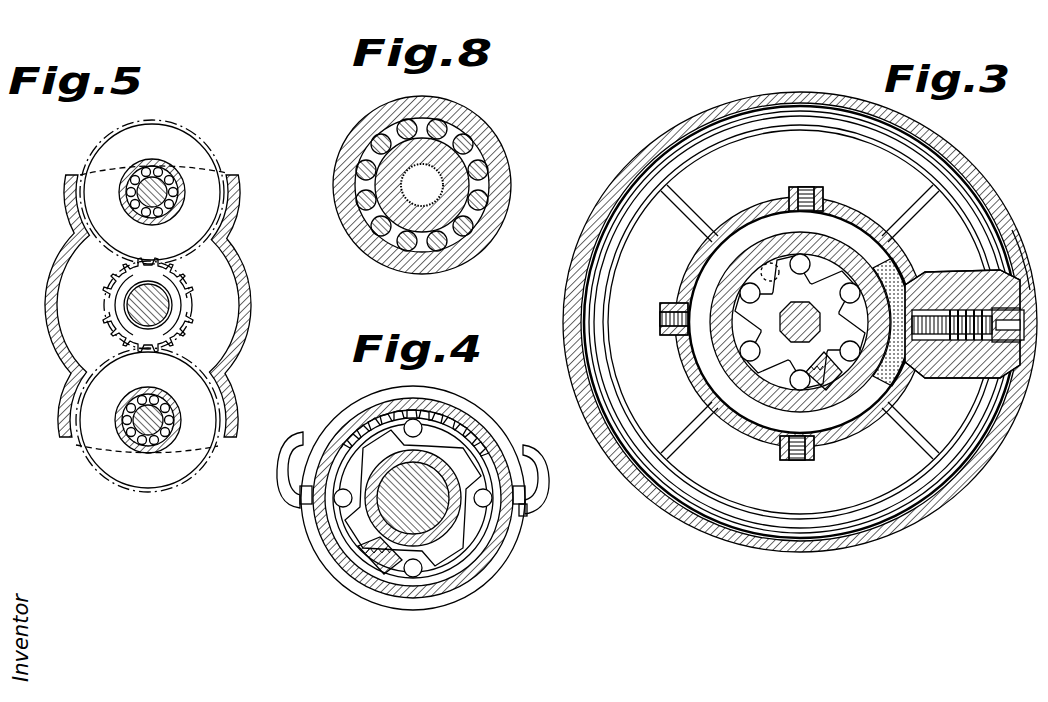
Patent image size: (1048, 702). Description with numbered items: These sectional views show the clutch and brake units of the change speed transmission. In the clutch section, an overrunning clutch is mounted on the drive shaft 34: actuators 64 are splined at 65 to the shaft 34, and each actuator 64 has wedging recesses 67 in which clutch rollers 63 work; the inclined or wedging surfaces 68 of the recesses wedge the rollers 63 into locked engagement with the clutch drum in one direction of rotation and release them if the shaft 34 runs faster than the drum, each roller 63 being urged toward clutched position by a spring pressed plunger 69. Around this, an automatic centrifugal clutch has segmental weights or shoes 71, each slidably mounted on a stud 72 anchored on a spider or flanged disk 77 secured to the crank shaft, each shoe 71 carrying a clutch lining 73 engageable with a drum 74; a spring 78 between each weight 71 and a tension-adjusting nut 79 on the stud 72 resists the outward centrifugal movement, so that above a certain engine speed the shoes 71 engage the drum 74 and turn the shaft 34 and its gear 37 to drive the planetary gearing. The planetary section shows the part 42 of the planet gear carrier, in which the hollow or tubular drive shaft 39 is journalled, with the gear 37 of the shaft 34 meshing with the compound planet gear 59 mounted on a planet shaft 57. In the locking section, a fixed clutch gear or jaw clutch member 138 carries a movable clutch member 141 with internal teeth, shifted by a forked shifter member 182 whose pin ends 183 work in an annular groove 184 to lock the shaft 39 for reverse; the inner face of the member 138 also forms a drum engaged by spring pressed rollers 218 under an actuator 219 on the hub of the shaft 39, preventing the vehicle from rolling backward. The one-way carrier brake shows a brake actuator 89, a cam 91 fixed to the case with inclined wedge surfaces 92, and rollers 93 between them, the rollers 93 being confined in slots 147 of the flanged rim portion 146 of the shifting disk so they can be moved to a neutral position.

In FIG. 5, the drive shaft 34 is at (158, 315).
In FIG. 4, the drive shaft 34 is at (420, 486).
In FIG. 5, the gear 37 is at (176, 262).
In FIG. 4, the hollow or tubular drive shaft 39 is at (375, 506).
In FIG. 5, the part of planet gear carrier 42 is at (236, 304).
In FIG. 5, the planet shafts 57 is at (148, 190).
In FIG. 5, the planet gear 59 is at (205, 206).
In FIG. 3, the clutch rollers 63 is at (758, 255).
In FIG. 3, the actuators 64 is at (852, 282).
In FIG. 3, the spline 65 is at (770, 325).
In FIG. 3, the wedging recesses 67 is at (821, 323).
In FIG. 3, the inclined or wedging surfaces 68 is at (796, 282).
In FIG. 3, the spring pressed plunger 69 is at (826, 386).
In FIG. 3, the segmental weights or shoes 71 is at (1012, 395).
In FIG. 3, the stud 72 is at (936, 300).
In FIG. 3, the clutch lining 73 is at (1020, 255).
In FIG. 3, the drum 74 is at (956, 168).
In FIG. 3, the spider or flanged disk 77 is at (920, 233).
In FIG. 3, the spring 78 is at (952, 344).
In FIG. 3, the tension-adjusting nut 79 is at (1000, 342).
In FIG. 8, the brake actuator 89 is at (470, 122).
In FIG. 8, the cam 91 is at (470, 210).
In FIG. 8, the inclined wedge surfaces 92 is at (486, 172).
In FIG. 8, the rollers 93 is at (480, 158).
In FIG. 4, the clutch gear or jaw clutch member 138 is at (470, 418).
In FIG. 4, the movable clutch member 141 is at (450, 425).
In FIG. 8, the flanged rim portion 146 is at (368, 166).
In FIG. 8, the slots 147 is at (378, 136).
In FIG. 4, the forked shifter member 182 is at (292, 436).
In FIG. 4, the pin ends 183 is at (525, 520).
In FIG. 4, the annular groove 184 is at (500, 565).
In FIG. 4, the spring pressed rollers 218 is at (415, 576).
In FIG. 4, the actuator 219 is at (464, 542).